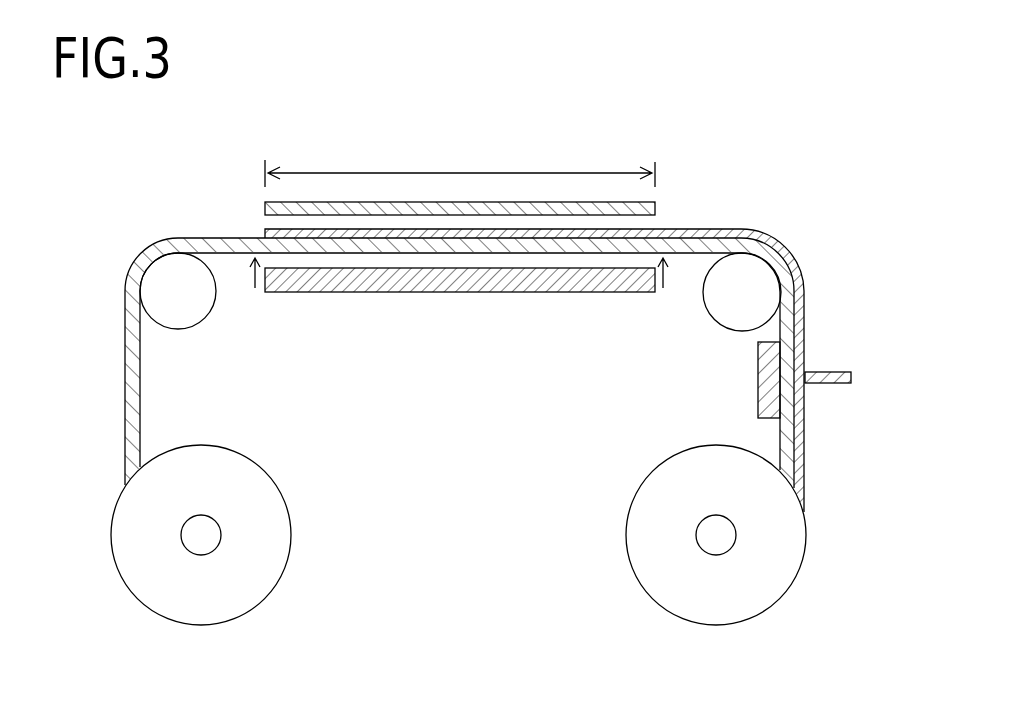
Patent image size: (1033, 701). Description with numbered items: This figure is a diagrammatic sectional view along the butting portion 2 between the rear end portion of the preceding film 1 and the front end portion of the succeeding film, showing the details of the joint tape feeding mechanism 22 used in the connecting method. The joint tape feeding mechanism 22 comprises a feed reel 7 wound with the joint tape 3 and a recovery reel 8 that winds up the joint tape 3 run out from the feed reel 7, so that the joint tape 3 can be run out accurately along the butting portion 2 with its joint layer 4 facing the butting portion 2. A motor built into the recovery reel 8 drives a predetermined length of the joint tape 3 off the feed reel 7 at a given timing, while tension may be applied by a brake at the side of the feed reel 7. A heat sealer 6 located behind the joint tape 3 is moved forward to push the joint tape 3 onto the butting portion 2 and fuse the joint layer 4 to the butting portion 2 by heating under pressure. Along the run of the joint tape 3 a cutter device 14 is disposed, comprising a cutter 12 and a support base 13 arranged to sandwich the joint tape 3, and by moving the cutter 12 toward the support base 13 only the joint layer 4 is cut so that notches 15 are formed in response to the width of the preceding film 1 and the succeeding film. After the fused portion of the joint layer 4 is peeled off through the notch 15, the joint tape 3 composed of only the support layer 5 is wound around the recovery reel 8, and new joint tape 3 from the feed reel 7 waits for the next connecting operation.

The preceding film 1 is at (465, 186).
The butting portion 2 is at (657, 209).
The joint tape 3 is at (815, 245).
The joint layer 4 is at (258, 233).
The support layer 5 is at (127, 393).
The heat sealer 6 is at (440, 294).
The feed reel 7 is at (693, 562).
The recovery reel 8 is at (240, 553).
The cutter 12 is at (829, 384).
The support base 13 is at (758, 378).
The cutter device 14 is at (799, 357).
The notch 15 is at (657, 232).
The joint tape feeding mechanism 22 is at (489, 418).